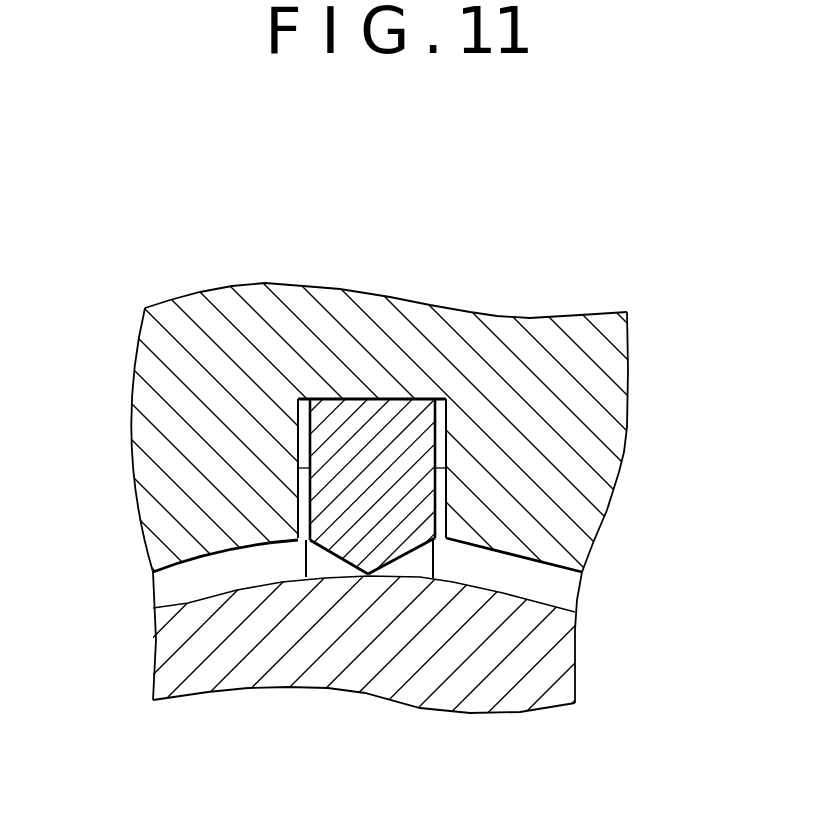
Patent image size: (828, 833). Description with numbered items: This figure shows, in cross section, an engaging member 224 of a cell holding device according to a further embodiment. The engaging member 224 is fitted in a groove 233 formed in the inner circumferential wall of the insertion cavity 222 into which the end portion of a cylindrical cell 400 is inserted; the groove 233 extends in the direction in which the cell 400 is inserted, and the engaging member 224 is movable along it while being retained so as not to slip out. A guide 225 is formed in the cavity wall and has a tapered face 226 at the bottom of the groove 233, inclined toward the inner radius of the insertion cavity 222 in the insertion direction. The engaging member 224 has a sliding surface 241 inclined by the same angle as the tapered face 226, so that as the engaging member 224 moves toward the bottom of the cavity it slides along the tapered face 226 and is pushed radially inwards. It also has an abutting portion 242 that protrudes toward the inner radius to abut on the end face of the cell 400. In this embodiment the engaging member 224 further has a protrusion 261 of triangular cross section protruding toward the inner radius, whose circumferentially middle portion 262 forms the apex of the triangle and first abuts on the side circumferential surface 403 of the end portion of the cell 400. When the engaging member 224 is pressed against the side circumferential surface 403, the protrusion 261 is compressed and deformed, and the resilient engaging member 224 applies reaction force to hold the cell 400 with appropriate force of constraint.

The guide 225 is at (240, 350).
The tapered face 226 is at (428, 399).
The engaging member 224 is at (420, 452).
The sliding surface 241 is at (362, 398).
The abutting portion 242 is at (425, 553).
The groove 233 is at (298, 545).
The insertion cavity 222 is at (523, 555).
The protrusion 261 is at (327, 555).
The circumferentially middle portion 262 is at (368, 575).
The side circumferential surface 403 is at (530, 607).
The cell 400 is at (523, 688).